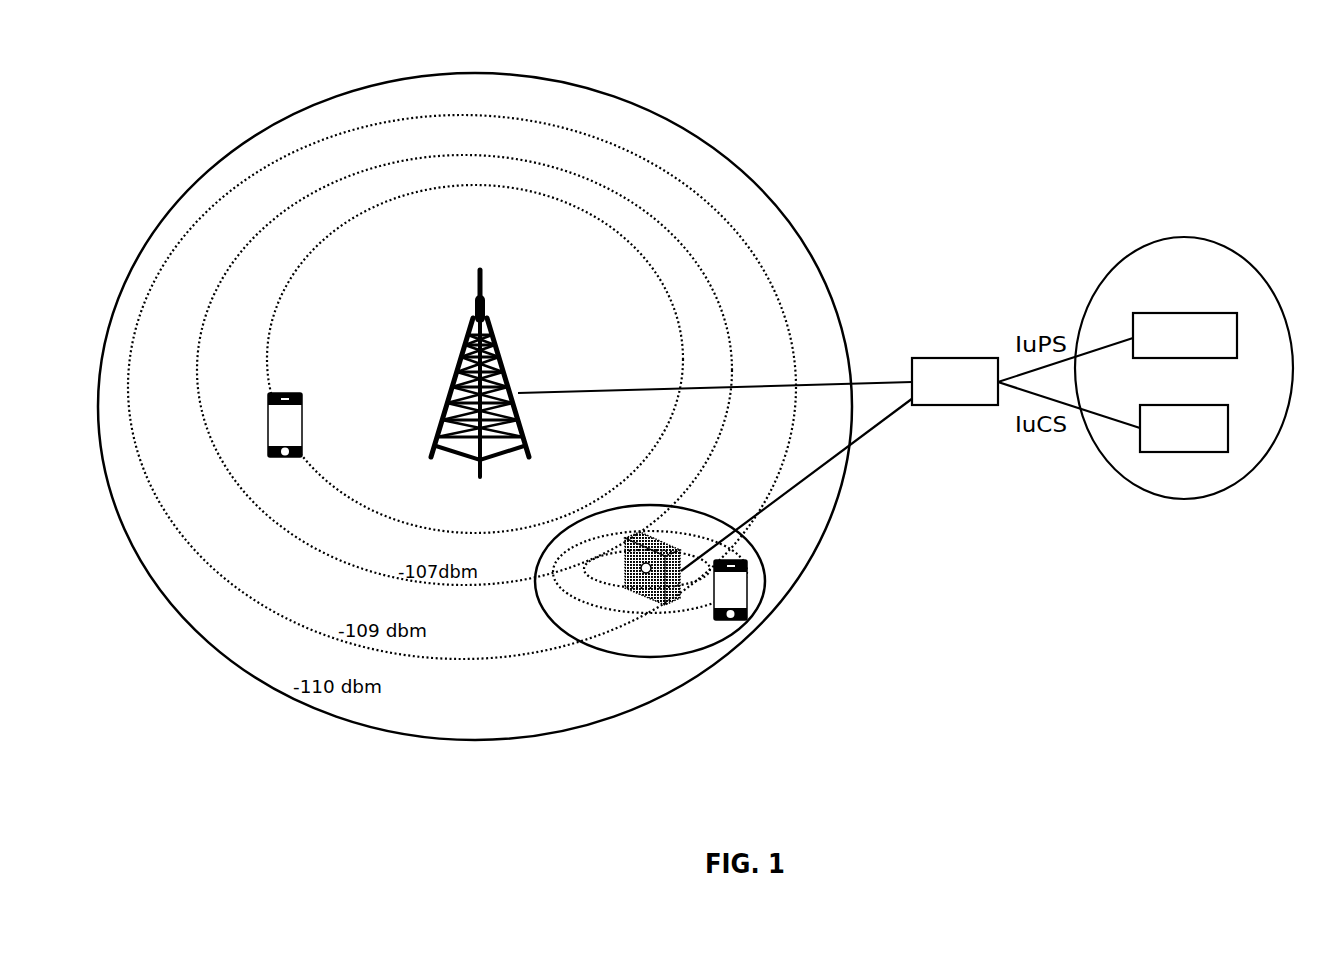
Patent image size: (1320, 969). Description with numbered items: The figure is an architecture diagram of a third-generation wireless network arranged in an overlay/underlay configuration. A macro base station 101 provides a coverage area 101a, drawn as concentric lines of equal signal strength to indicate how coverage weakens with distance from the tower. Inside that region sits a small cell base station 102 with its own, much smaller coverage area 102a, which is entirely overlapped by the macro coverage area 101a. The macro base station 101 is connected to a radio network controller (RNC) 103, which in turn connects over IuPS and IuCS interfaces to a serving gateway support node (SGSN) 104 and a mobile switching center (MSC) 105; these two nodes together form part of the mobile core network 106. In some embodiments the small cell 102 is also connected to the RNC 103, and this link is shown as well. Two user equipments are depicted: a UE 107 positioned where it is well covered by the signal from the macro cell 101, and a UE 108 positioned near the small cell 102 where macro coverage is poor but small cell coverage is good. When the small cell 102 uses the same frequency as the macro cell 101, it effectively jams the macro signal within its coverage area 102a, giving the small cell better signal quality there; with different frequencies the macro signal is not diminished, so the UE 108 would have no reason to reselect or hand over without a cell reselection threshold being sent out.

The macro base station 101 is at (505, 303).
The coverage area 101a is at (725, 142).
The small cell base station 102 is at (680, 552).
The coverage area 102a is at (718, 503).
The radio network controller (RNC) 103 is at (978, 355).
The serving gateway support node (SGSN) 104 is at (1183, 360).
The mobile switching center (MSC) 105 is at (1195, 455).
The mobile core network 106 is at (1263, 278).
The user equipment (UE) 107 is at (317, 408).
The user equipment (UE) 108 is at (745, 583).